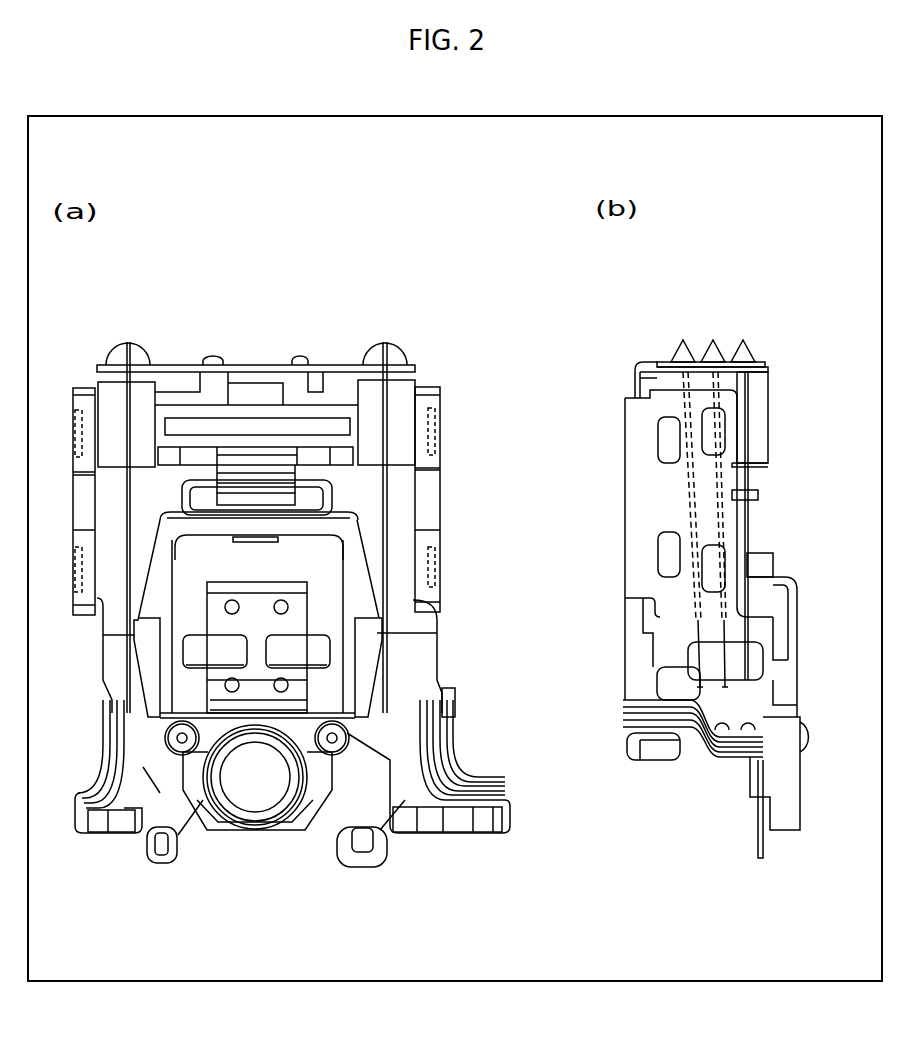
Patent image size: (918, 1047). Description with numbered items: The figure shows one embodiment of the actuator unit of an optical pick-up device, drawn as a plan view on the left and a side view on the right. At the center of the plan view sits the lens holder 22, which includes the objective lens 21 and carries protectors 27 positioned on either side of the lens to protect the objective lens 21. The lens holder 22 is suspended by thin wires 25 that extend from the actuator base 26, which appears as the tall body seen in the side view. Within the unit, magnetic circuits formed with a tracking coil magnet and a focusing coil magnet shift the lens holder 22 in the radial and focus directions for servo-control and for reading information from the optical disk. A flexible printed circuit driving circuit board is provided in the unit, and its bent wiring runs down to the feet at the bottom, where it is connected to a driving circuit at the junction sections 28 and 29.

The objective lens 21 is at (255, 797).
The lens holder 22 is at (322, 800).
The thin wires 25 is at (385, 428).
The actuator base 26 is at (645, 480).
The protectors 27 is at (180, 742).
The junction section 28 is at (457, 820).
The junction section 29 is at (98, 822).